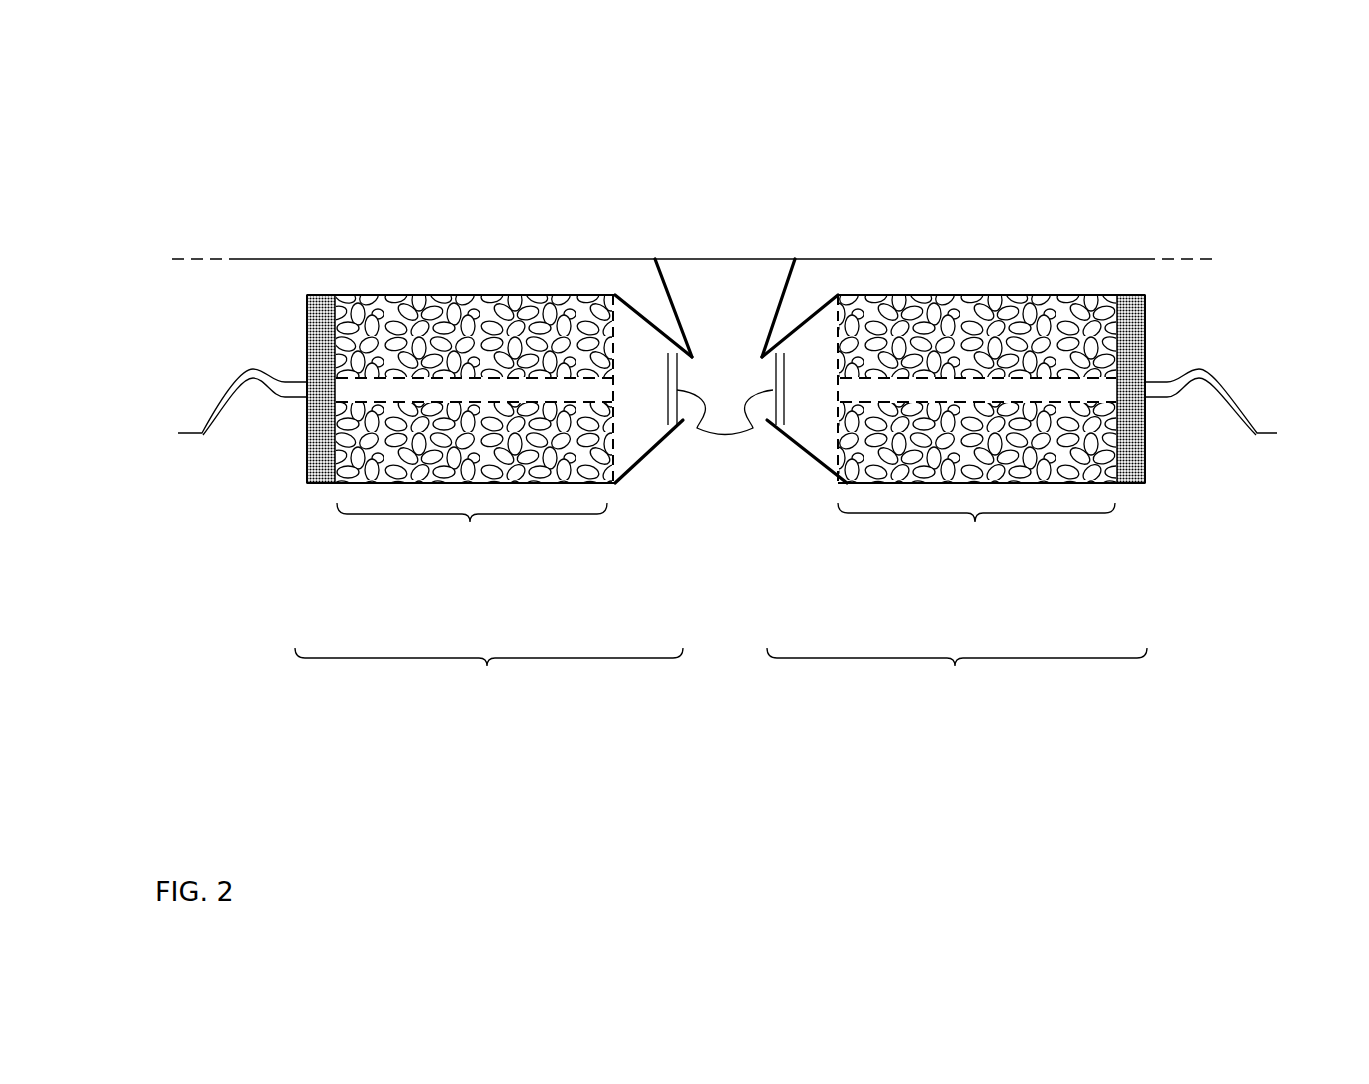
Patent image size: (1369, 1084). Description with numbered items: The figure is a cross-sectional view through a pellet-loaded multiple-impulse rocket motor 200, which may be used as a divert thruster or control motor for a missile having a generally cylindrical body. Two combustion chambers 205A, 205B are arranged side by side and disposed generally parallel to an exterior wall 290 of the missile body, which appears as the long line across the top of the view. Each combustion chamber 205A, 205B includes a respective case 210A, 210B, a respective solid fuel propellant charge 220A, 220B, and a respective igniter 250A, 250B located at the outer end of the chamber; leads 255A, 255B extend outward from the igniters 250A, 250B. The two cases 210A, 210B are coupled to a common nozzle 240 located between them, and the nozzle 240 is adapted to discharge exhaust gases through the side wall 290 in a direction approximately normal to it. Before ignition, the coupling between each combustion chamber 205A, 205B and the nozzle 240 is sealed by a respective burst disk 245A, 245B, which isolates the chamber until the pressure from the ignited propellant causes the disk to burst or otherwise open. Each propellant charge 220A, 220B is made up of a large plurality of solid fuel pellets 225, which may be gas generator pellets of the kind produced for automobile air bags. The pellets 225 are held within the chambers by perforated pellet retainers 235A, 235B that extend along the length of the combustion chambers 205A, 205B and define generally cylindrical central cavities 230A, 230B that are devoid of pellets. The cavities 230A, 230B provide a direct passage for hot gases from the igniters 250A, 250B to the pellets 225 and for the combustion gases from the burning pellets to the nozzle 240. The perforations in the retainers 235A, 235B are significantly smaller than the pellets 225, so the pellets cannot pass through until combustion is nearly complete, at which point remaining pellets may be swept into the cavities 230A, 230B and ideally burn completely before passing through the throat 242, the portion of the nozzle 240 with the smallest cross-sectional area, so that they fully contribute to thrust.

The pellet-loaded multiple-impulse rocket motor 200 is at (268, 740).
The combustion chamber 205A is at (431, 448).
The combustion chamber 205B is at (1011, 454).
The case 210A is at (458, 295).
The case 210B is at (1010, 295).
The solid fuel propellant charge 220A is at (472, 529).
The solid fuel propellant charge 220B is at (976, 529).
The solid fuel pellets 225 is at (482, 340).
The cavity 230A is at (372, 388).
The cavity 230B is at (1050, 390).
The perforated pellet retainer 235A is at (610, 407).
The perforated pellet retainer 235B is at (847, 407).
The nozzle 240 is at (792, 287).
The throat 242 is at (723, 357).
The burst disk 245A is at (683, 422).
The burst disk 245B is at (767, 422).
The igniter 250A is at (323, 443).
The igniter 250B is at (1130, 450).
The first lead wire 255A is at (210, 411).
The second lead wire 255B is at (1244, 411).
The exterior wall 290 is at (273, 259).